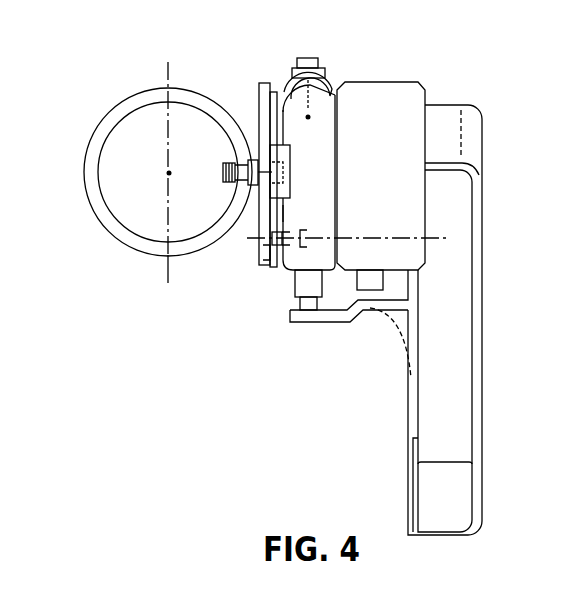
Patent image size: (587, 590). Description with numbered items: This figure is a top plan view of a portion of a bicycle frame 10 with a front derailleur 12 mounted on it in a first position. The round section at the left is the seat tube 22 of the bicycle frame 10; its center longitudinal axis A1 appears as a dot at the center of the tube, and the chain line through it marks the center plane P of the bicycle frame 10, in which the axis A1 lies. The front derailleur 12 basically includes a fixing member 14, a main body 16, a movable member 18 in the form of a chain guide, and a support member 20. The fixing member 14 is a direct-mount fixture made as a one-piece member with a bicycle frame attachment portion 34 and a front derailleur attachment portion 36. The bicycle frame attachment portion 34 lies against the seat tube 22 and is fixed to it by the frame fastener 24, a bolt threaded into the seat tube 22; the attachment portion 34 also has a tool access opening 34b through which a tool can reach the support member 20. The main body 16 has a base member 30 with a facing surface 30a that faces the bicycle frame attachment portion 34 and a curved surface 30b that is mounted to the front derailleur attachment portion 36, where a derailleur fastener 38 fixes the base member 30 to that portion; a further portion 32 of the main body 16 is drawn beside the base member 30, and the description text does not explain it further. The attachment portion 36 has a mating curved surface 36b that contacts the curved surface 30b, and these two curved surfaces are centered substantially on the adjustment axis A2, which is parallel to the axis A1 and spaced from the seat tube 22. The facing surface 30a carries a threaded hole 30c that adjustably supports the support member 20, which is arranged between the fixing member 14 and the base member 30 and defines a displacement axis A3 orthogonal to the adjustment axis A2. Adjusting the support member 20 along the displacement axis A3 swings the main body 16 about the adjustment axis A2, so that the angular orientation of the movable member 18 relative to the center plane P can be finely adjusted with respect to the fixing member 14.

The bicycle frame 10 is at (143, 172).
The front derailleur 12 is at (475, 299).
The fixing member 14 is at (236, 161).
The main body 16 is at (315, 214).
The movable member 18 is at (486, 298).
The support member 20 is at (276, 264).
The seat tube 22 is at (108, 233).
The frame fastener 24 is at (222, 170).
The base member 30 is at (284, 196).
The facing surface 30a is at (283, 213).
The curved surface 30b is at (290, 84).
The threaded hole 30c is at (302, 228).
The second body 32 is at (347, 222).
The bicycle frame attachment portion 34 is at (247, 100).
The tool access opening 34b is at (266, 258).
The front derailleur attachment portion 36 is at (278, 80).
The curved surface 36b is at (312, 90).
The derailleur fastener 38 is at (311, 57).
The center longitudinal axis A1 is at (166, 173).
The adjustment axis A2 is at (308, 120).
The displacement axis A3 is at (357, 238).
The center plane P is at (165, 270).